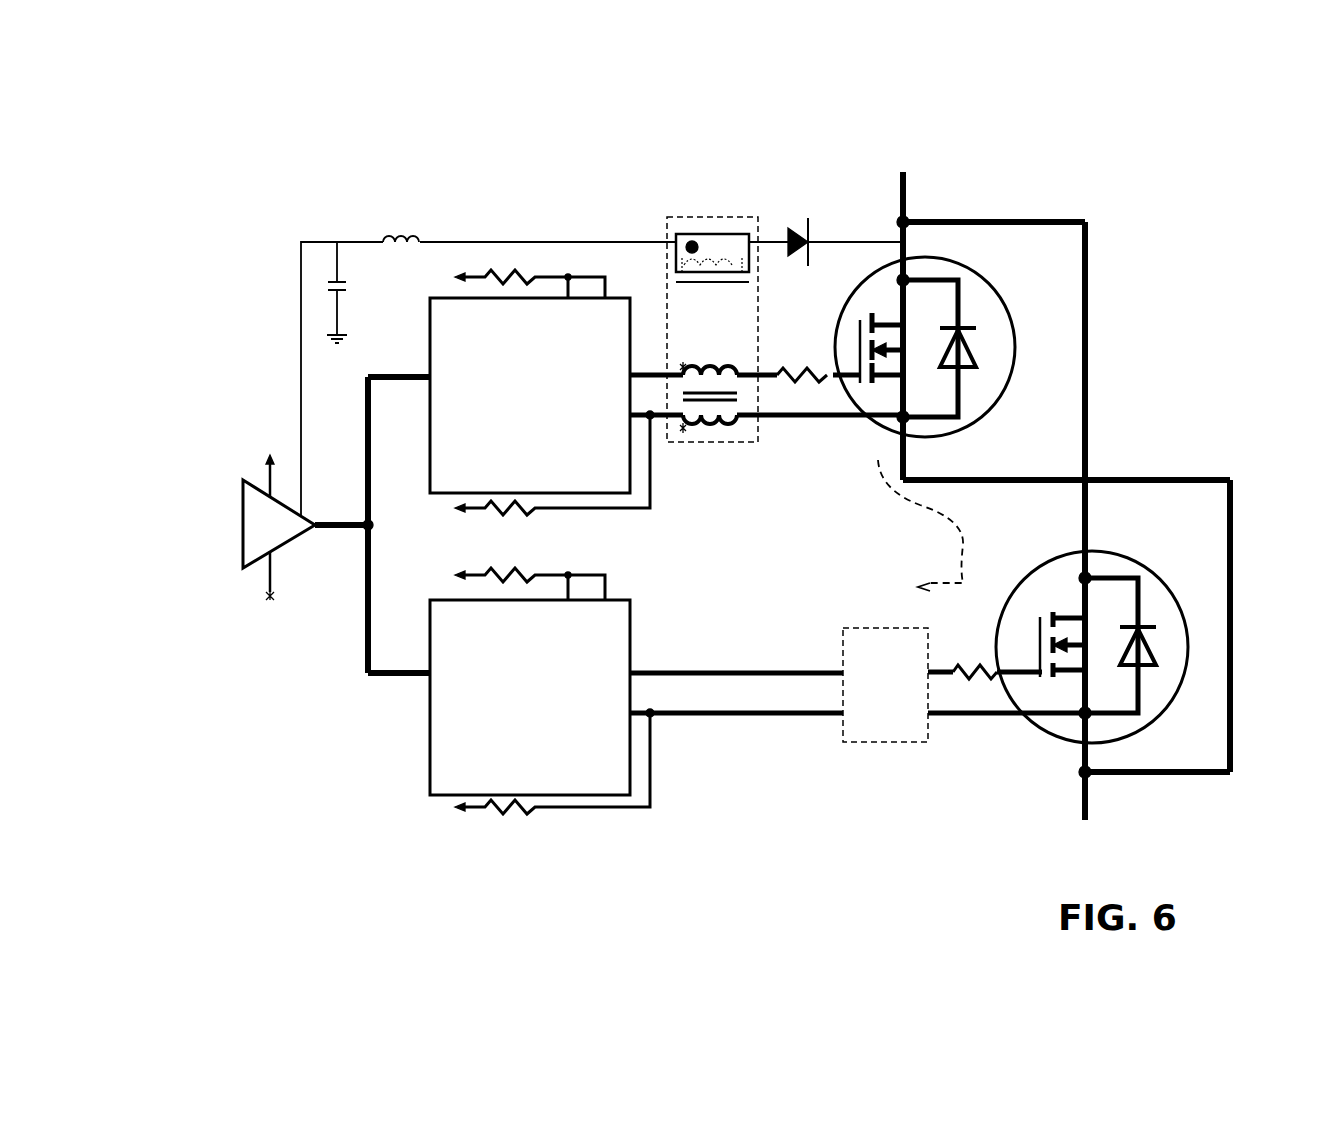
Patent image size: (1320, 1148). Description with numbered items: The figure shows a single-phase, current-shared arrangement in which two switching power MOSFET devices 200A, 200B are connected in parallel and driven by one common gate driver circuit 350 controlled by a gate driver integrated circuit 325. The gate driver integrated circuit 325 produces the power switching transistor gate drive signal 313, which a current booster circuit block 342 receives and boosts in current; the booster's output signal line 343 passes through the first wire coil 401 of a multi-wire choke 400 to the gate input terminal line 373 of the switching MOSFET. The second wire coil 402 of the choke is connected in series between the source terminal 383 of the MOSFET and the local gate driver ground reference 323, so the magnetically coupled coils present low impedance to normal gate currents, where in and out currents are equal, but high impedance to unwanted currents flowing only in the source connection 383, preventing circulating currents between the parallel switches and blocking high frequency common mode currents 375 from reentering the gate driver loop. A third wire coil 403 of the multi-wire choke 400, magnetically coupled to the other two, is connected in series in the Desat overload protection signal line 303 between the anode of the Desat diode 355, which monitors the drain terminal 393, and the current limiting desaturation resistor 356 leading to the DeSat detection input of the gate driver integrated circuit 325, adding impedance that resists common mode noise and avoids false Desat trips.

The Desat overload protection signal line 303 is at (300, 277).
The current limiting desaturation resistor 356 is at (402, 237).
The gate driver integrated circuit 325 is at (250, 508).
The power switching transistor gate drive signal 313 is at (347, 528).
The gate driver circuit 350 is at (505, 203).
The current booster circuit block 342 is at (632, 462).
The output signal line 343 is at (652, 370).
The local gate driver ground reference 323 is at (658, 420).
The source terminal 383 is at (805, 420).
The multi-wire choke 400 is at (667, 225).
The third wire coil 403 is at (728, 242).
The first wire coil 401 is at (712, 375).
The second wire coil 402 is at (723, 420).
The Desat diode 355 is at (797, 220).
The drain terminal 393 is at (905, 190).
The gate input terminal line 373 is at (832, 375).
The switching power MOSFET device 200A is at (970, 268).
The switching power MOSFET device 200B is at (1125, 557).
The high frequency common mode currents 375 is at (967, 545).